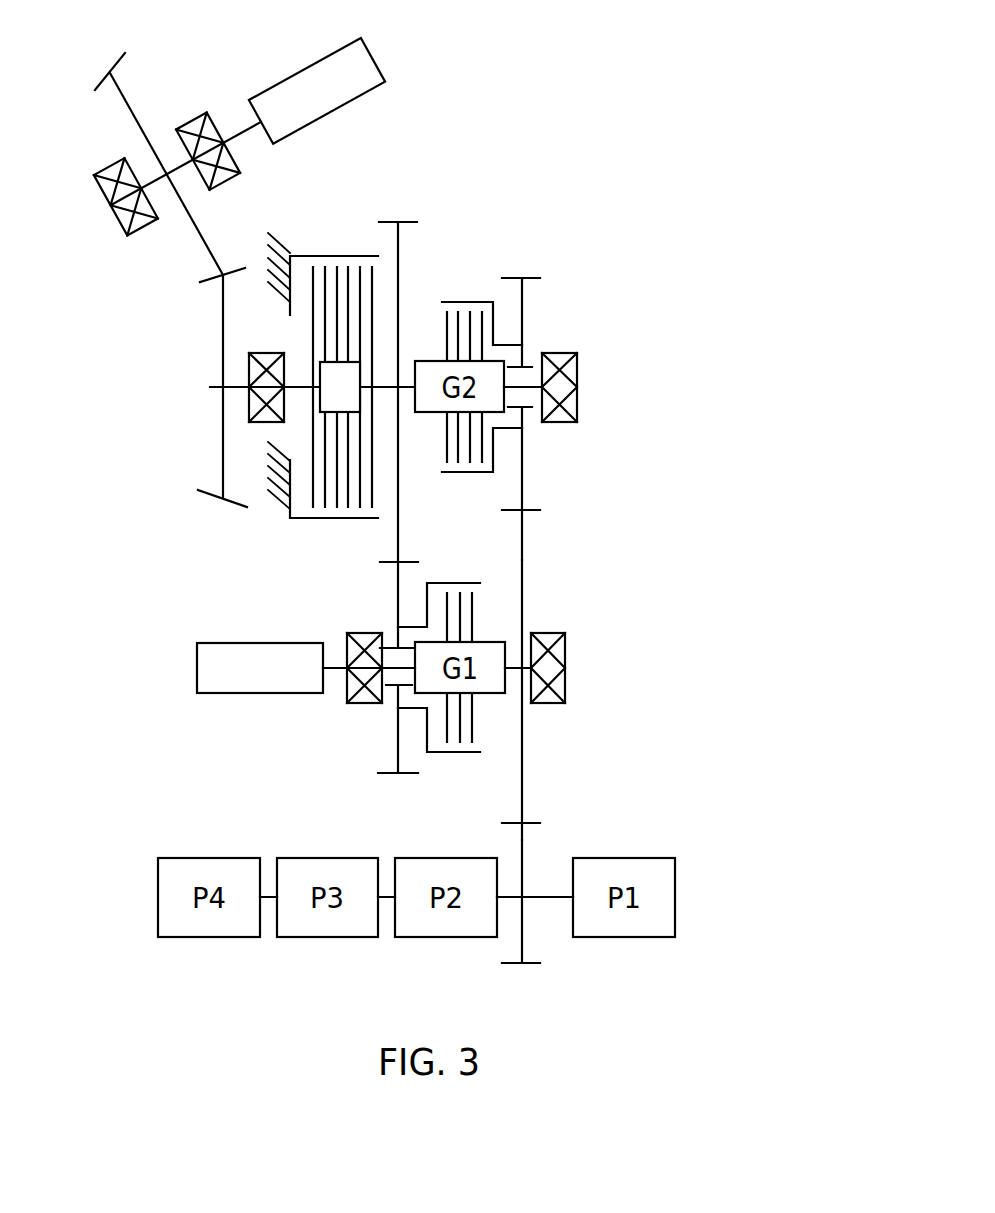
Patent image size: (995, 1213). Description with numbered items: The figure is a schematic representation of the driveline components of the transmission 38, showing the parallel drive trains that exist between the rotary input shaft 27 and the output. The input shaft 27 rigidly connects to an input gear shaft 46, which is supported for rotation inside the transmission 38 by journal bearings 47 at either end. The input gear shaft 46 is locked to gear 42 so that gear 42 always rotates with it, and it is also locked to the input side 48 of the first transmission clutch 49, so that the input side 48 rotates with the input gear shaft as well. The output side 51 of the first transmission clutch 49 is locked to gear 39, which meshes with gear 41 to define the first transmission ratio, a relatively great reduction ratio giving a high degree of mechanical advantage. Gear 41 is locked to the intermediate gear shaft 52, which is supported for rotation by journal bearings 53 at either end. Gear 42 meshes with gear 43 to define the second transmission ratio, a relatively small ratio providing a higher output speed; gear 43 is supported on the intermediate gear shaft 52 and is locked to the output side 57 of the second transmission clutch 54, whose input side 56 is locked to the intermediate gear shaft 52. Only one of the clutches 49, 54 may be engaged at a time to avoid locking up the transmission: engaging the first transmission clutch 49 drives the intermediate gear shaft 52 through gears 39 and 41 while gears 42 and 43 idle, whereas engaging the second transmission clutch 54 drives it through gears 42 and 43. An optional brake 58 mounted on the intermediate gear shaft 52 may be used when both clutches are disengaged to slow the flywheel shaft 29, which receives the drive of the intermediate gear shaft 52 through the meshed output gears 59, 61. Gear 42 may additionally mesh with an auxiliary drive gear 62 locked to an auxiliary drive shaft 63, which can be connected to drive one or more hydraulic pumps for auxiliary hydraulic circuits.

The rotary input shaft 27 is at (202, 672).
The flywheel shaft 29 is at (380, 60).
The transmission 38 is at (732, 296).
The gear of first transmission ratio 39 is at (393, 745).
The gear of first transmission ratio 41 is at (398, 253).
The gear of second transmission ratio 42 is at (522, 730).
The gear of second transmission ratio 43 is at (523, 487).
The input gear shaft 46 is at (337, 665).
The journal bearings 47 is at (362, 705).
The input side of first transmission clutch 48 is at (473, 610).
The first transmission clutch 49 is at (452, 755).
The output side of first transmission clutch 51 is at (488, 571).
The intermediate gear shaft 52 is at (527, 385).
The journal bearings 53 is at (249, 400).
The second transmission clutch 54 is at (462, 287).
The input side of second transmission clutch 56 is at (447, 335).
The output side of second transmission clutch 57 is at (493, 466).
The brake 58 is at (323, 256).
The output gear 59 is at (222, 480).
The output gear 61 is at (130, 108).
The auxiliary drive gear 62 is at (522, 852).
The auxiliary drive shaft 63 is at (510, 903).